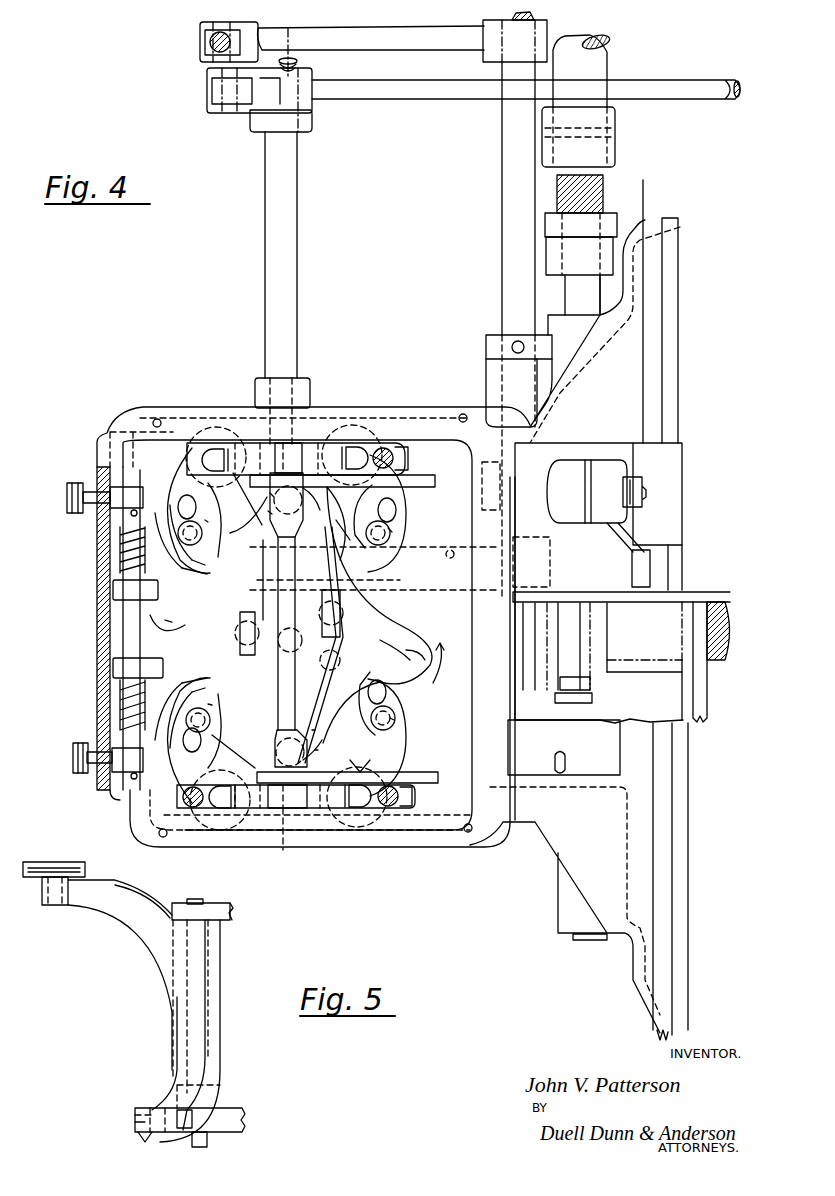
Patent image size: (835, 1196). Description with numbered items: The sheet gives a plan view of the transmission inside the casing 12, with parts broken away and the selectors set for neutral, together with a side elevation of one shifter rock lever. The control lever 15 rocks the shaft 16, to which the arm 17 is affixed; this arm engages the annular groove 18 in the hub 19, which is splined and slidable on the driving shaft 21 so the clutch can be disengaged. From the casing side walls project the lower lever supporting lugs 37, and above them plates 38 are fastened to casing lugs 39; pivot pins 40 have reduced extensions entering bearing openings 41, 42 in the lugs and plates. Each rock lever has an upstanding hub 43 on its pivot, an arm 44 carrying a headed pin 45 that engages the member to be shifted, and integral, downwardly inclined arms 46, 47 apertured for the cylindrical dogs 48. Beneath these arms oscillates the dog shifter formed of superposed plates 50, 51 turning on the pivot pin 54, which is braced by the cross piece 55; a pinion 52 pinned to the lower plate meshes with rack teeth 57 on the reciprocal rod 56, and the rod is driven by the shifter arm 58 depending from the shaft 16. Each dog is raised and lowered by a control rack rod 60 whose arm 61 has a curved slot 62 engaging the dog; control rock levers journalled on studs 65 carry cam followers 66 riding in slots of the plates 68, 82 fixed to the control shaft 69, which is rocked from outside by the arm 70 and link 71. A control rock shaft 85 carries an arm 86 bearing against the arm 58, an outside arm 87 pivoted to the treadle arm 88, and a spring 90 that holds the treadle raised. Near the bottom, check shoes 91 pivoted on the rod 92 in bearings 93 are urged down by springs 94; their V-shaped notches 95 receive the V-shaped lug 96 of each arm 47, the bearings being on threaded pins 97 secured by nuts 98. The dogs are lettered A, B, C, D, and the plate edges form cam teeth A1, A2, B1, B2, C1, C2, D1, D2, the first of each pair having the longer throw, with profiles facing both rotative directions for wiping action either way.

In FIG. 4, the casing 12 is at (440, 845).
In FIG. 5, the casing 12 is at (243, 1105).
In FIG. 4, the control lever 15 is at (606, 62).
In FIG. 4, the shaft 16 is at (605, 720).
In FIG. 4, the arm 17 is at (594, 697).
In FIG. 4, the annular groove 18 is at (578, 670).
In FIG. 4, the hub 19 is at (619, 699).
In FIG. 4, the transmission mechanism driving shaft 21 is at (708, 595).
In FIG. 4, the lower lever supporting lugs 37 is at (322, 438).
In FIG. 5, the lower lever supporting lugs 37 is at (243, 1118).
In FIG. 4, the plates 38 is at (386, 448).
In FIG. 5, the plates 38 is at (222, 920).
In FIG. 4, the casing lugs 39 is at (405, 445).
In FIG. 4, the pivot pins 40 is at (288, 625).
In FIG. 5, the pivot pins 40 is at (210, 968).
In FIG. 5, the bearing opening 41 is at (208, 1140).
In FIG. 5, the bearing opening 42 is at (212, 905).
In FIG. 4, the hub 43 is at (335, 762).
In FIG. 5, the hub 43 is at (177, 1035).
In FIG. 4, the arm 44 is at (290, 640).
In FIG. 5, the arm 44 is at (122, 920).
In FIG. 4, the headed pin 45 is at (240, 627).
In FIG. 5, the headed pin 45 is at (86, 872).
In FIG. 4, the arm 46 is at (340, 530).
In FIG. 5, the arm 46 is at (135, 1115).
In FIG. 4, the arm 47 is at (250, 533).
In FIG. 5, the arm 47 is at (135, 1122).
In FIG. 4, the cylindrical dogs 48 is at (190, 522).
In FIG. 4, the plate 50 is at (385, 622).
In FIG. 4, the plate 51 is at (412, 645).
In FIG. 4, the pinion 52 is at (340, 657).
In FIG. 4, the pivot pin 54 is at (296, 640).
In FIG. 4, the cross piece 55 is at (312, 565).
In FIG. 4, the longitudinally reciprocal rod 56 is at (452, 552).
In FIG. 4, the rack teeth 57 is at (378, 588).
In FIG. 4, the shifter arm 58 is at (626, 535).
In FIG. 4, the control rack rods 60 is at (214, 448).
In FIG. 4, the arm 61 is at (188, 462).
In FIG. 4, the curved slot 62 is at (197, 503).
In FIG. 4, the studs 65 is at (258, 405).
In FIG. 4, the cam followers 66 is at (322, 490).
In FIG. 4, the plate 68 is at (425, 477).
In FIG. 4, the control shaft 69 is at (298, 348).
In FIG. 4, the arm 70 is at (212, 100).
In FIG. 4, the link 71 is at (434, 98).
In FIG. 4, the plate 82 is at (432, 783).
In FIG. 4, the control rock shaft 85 is at (502, 245).
In FIG. 4, the arm 86 is at (555, 560).
In FIG. 4, the arm 87 is at (403, 37).
In FIG. 4, the treadle arm 88 is at (204, 42).
In FIG. 4, the spring 90 is at (293, 62).
In FIG. 4, the check shoes 91 is at (130, 580).
In FIG. 4, the rod 92 is at (122, 640).
In FIG. 4, the bearings 93 is at (126, 633).
In FIG. 4, the springs 94 is at (118, 540).
In FIG. 4, the V-shaped notches 95 is at (157, 500).
In FIG. 4, the V-shaped lug 96 is at (195, 574).
In FIG. 5, the V-shaped lug 96 is at (140, 1142).
In FIG. 4, the threaded pins 97 is at (83, 499).
In FIG. 4, the nuts 98 is at (80, 490).
In FIG. 4, the dog A is at (392, 532).
In FIG. 4, the cam tooth A1 is at (446, 651).
In FIG. 4, the cam tooth A2 is at (406, 650).
In FIG. 4, the dog B is at (208, 522).
In FIG. 4, the cam tooth B1 is at (270, 493).
In FIG. 4, the cam tooth B2 is at (268, 511).
In FIG. 4, the dog C is at (212, 705).
In FIG. 4, the cam tooth C1 is at (168, 625).
In FIG. 4, the cam tooth C2 is at (172, 622).
In FIG. 4, the dog D is at (394, 720).
In FIG. 4, the cam tooth D1 is at (318, 750).
In FIG. 4, the cam tooth D2 is at (315, 730).